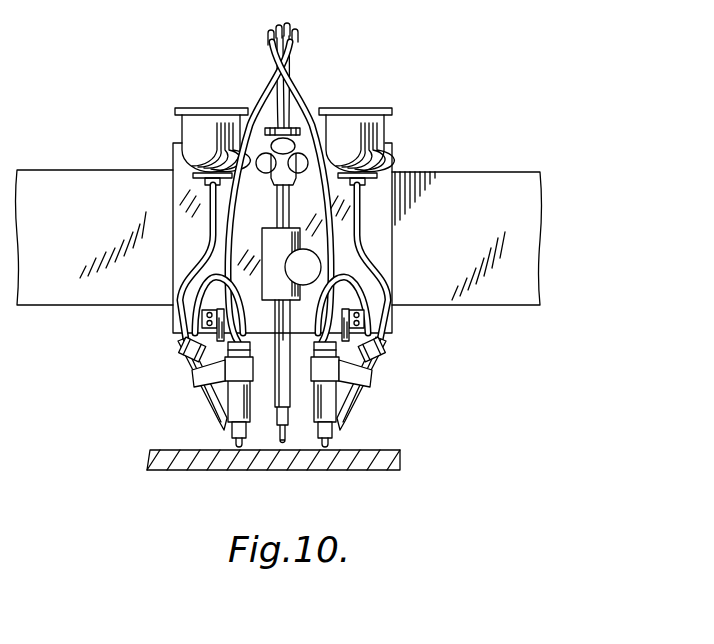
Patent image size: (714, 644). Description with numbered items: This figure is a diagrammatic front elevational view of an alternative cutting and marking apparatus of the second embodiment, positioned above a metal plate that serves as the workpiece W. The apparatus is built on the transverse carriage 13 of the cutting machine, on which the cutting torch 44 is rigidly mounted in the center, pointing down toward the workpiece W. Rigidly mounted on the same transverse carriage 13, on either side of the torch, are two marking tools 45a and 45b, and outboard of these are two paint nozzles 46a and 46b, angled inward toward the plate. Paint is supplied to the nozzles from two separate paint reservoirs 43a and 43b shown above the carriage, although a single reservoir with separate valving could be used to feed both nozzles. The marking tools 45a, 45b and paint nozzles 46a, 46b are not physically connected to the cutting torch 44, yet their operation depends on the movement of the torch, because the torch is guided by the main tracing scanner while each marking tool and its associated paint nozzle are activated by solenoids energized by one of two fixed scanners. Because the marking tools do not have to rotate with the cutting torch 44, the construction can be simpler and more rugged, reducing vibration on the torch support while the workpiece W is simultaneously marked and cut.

The transverse carriage 13 is at (375, 239).
The paint reservoir 43a is at (186, 133).
The paint reservoir 43b is at (343, 122).
The cutting torch 44 is at (283, 442).
The marking tool 45a is at (232, 430).
The marking tool 45b is at (330, 432).
The paint nozzle 46a is at (210, 385).
The paint nozzle 46b is at (353, 405).
The workpiece W is at (376, 462).